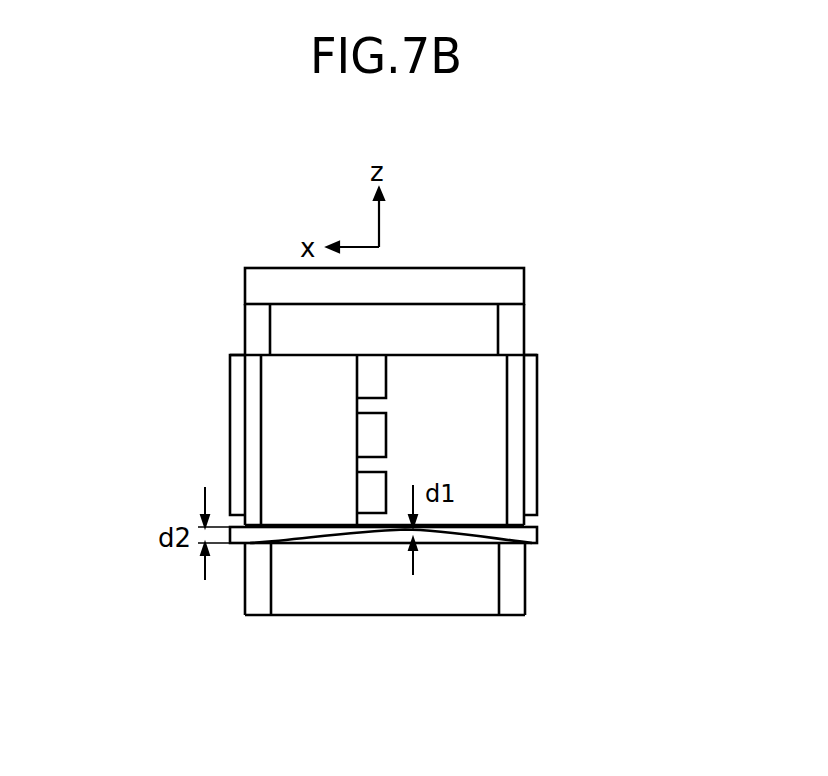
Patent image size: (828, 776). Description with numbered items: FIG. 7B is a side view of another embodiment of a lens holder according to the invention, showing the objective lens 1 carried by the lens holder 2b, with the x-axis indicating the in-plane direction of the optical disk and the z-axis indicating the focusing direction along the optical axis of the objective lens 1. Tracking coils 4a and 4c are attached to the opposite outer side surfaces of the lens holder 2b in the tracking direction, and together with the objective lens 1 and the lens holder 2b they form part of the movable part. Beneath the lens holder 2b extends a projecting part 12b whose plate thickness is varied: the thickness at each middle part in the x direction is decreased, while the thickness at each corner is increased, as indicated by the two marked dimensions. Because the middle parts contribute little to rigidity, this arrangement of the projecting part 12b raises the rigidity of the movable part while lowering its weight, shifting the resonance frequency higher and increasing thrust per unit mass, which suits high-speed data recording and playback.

The objective lens 1 is at (432, 278).
The lens holder 2b is at (475, 378).
The tracking coil 4a is at (530, 443).
The tracking coil 4c is at (235, 435).
The projecting part 12b is at (285, 532).